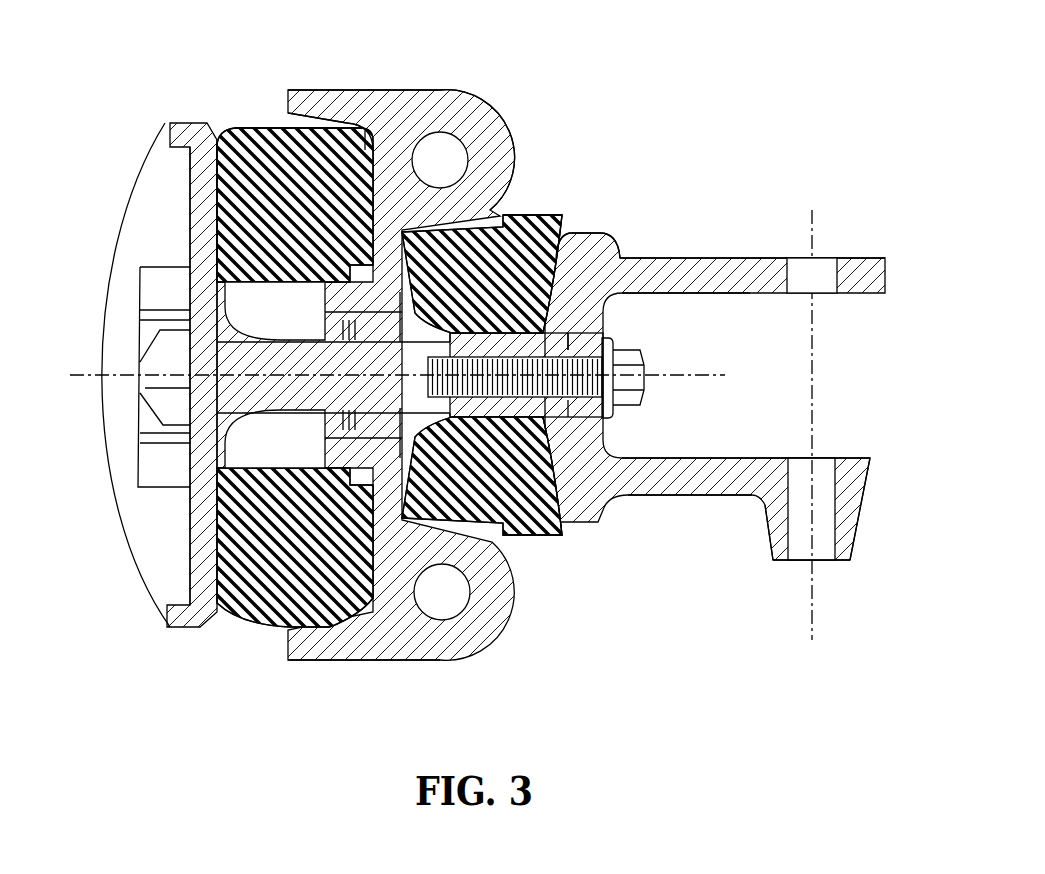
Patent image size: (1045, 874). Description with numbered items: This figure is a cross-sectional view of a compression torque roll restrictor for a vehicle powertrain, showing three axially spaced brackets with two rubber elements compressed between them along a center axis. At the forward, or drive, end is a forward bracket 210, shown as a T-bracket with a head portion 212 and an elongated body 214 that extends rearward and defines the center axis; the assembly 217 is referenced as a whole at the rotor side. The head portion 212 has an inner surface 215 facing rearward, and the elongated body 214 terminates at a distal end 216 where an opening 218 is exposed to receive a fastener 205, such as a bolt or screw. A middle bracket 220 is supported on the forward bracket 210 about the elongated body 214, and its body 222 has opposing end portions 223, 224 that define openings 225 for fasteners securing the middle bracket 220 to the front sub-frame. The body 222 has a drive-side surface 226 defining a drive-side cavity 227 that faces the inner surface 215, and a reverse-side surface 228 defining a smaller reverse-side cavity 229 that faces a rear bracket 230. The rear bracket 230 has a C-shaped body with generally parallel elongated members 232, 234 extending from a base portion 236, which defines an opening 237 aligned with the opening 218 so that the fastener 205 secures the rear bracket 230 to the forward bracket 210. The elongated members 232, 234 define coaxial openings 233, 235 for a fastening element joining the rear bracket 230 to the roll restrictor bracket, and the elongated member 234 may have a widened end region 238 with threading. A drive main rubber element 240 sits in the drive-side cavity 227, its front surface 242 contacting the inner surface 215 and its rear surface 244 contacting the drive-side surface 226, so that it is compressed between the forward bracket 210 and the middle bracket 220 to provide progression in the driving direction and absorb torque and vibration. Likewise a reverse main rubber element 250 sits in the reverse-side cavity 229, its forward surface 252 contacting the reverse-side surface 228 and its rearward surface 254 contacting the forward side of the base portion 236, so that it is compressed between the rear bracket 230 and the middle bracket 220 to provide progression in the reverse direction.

The fastener 205 is at (648, 367).
The forward bracket 210 is at (150, 217).
The head portion 212 is at (163, 545).
The elongated body 214 is at (323, 412).
The inner surface 215 is at (187, 215).
The distal end 216 is at (600, 300).
The rotor assembly 217 is at (100, 422).
The opening 218 is at (582, 355).
The middle bracket 220 is at (510, 130).
The body 222 is at (502, 148).
The end portion 223 is at (403, 130).
The end portion 224 is at (430, 645).
The openings 225 is at (442, 160).
The drive-side surface 226 is at (368, 160).
The drive-side cavity 227 is at (248, 140).
The reverse-side surface 228 is at (470, 210).
The reverse-side cavity 229 is at (490, 570).
The rear bracket 230 is at (813, 598).
The elongated member 232 is at (748, 277).
The opening 233 is at (825, 277).
The elongated member 234 is at (733, 477).
The opening 235 is at (818, 563).
The base portion 236 is at (588, 490).
The opening 237 is at (650, 300).
The widened end region 238 is at (853, 483).
The drive main rubber element 240 is at (280, 127).
The front surface 242 is at (188, 178).
The rear surface 244 is at (345, 165).
The reverse main rubber element 250 is at (542, 522).
The forward surface 252 is at (490, 225).
The rearward surface 254 is at (558, 322).